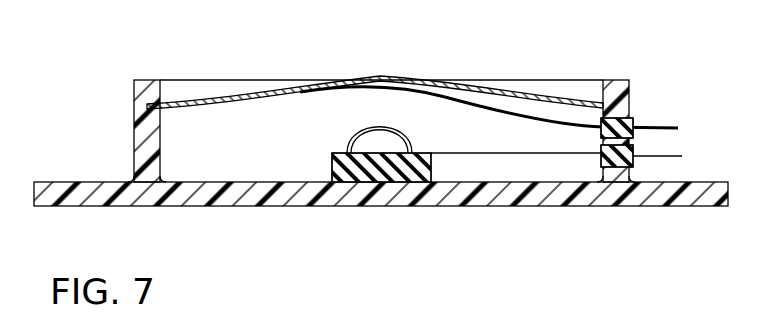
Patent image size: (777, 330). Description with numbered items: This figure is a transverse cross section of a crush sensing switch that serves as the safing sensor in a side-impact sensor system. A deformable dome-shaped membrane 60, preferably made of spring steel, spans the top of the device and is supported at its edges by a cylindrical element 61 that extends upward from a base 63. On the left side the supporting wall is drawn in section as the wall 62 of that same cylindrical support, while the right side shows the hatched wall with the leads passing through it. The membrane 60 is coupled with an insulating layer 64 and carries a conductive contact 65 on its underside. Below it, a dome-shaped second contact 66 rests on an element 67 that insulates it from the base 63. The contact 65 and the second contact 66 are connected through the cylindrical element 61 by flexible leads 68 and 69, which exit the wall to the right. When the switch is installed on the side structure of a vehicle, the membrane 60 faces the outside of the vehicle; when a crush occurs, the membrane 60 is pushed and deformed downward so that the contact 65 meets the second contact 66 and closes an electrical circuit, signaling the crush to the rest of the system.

The deformable dome-shaped membrane 60 is at (250, 95).
The cylindrical element 61 is at (620, 80).
The left side wall 62 is at (134, 90).
The base 63 is at (228, 206).
The insulating layer 64 is at (296, 94).
The conductive contact 65 is at (345, 88).
The dome-shaped second contact 66 is at (408, 140).
The element 67 is at (332, 167).
The flexible lead 68 is at (651, 128).
The flexible lead 69 is at (682, 156).